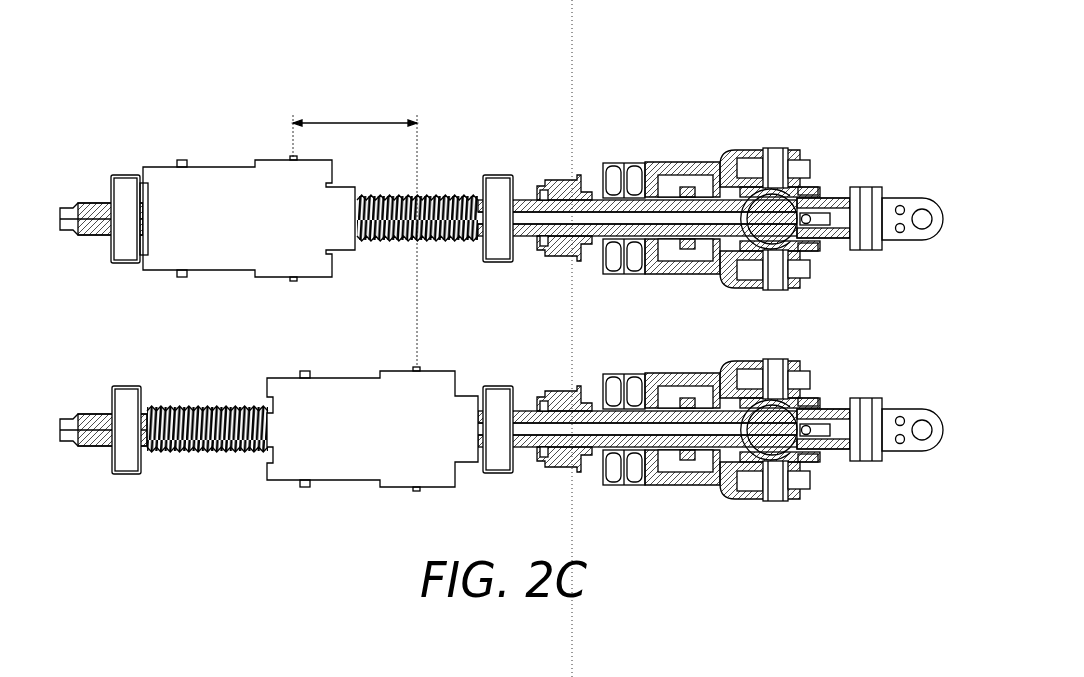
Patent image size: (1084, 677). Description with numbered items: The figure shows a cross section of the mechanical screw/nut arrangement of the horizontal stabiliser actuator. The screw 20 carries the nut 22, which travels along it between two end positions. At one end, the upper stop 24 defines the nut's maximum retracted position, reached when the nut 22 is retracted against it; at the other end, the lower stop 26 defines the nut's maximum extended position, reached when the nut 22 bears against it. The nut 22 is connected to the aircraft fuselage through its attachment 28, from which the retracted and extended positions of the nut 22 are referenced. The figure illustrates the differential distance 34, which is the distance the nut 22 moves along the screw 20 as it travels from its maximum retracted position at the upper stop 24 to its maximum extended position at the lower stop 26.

The threaded rod 20 is at (447, 242).
The nut 22 is at (229, 270).
The upper stop 24 is at (497, 175).
The lower stop 26 is at (125, 175).
The attachment 28 is at (775, 148).
The differential distance 34 is at (352, 123).